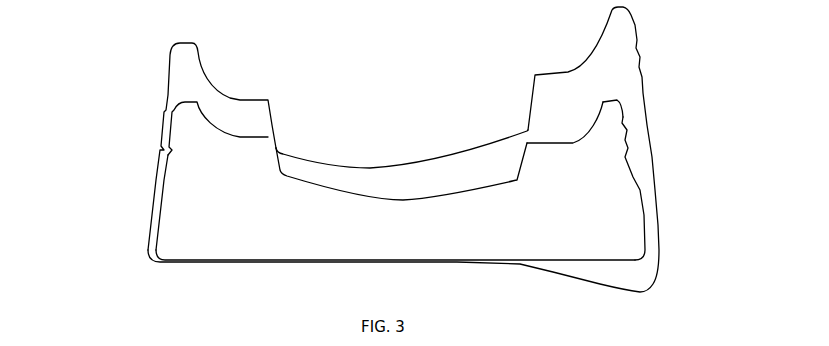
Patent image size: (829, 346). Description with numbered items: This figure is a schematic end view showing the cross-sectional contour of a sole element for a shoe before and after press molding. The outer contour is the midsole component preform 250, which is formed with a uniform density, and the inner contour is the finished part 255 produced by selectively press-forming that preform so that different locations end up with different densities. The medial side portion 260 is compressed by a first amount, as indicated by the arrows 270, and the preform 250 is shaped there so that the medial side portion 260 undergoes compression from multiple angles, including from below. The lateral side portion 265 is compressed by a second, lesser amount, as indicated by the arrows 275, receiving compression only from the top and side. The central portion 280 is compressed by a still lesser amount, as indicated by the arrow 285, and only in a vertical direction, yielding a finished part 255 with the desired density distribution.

The midsole component preform 250 is at (310, 150).
The finished part 255 is at (629, 97).
The medial side portion 260 is at (564, 209).
The lateral side portion 265 is at (200, 221).
The arrows 270 is at (558, 109).
The arrows 275 is at (245, 116).
The central portion 280 is at (379, 246).
The arrow 285 is at (406, 182).